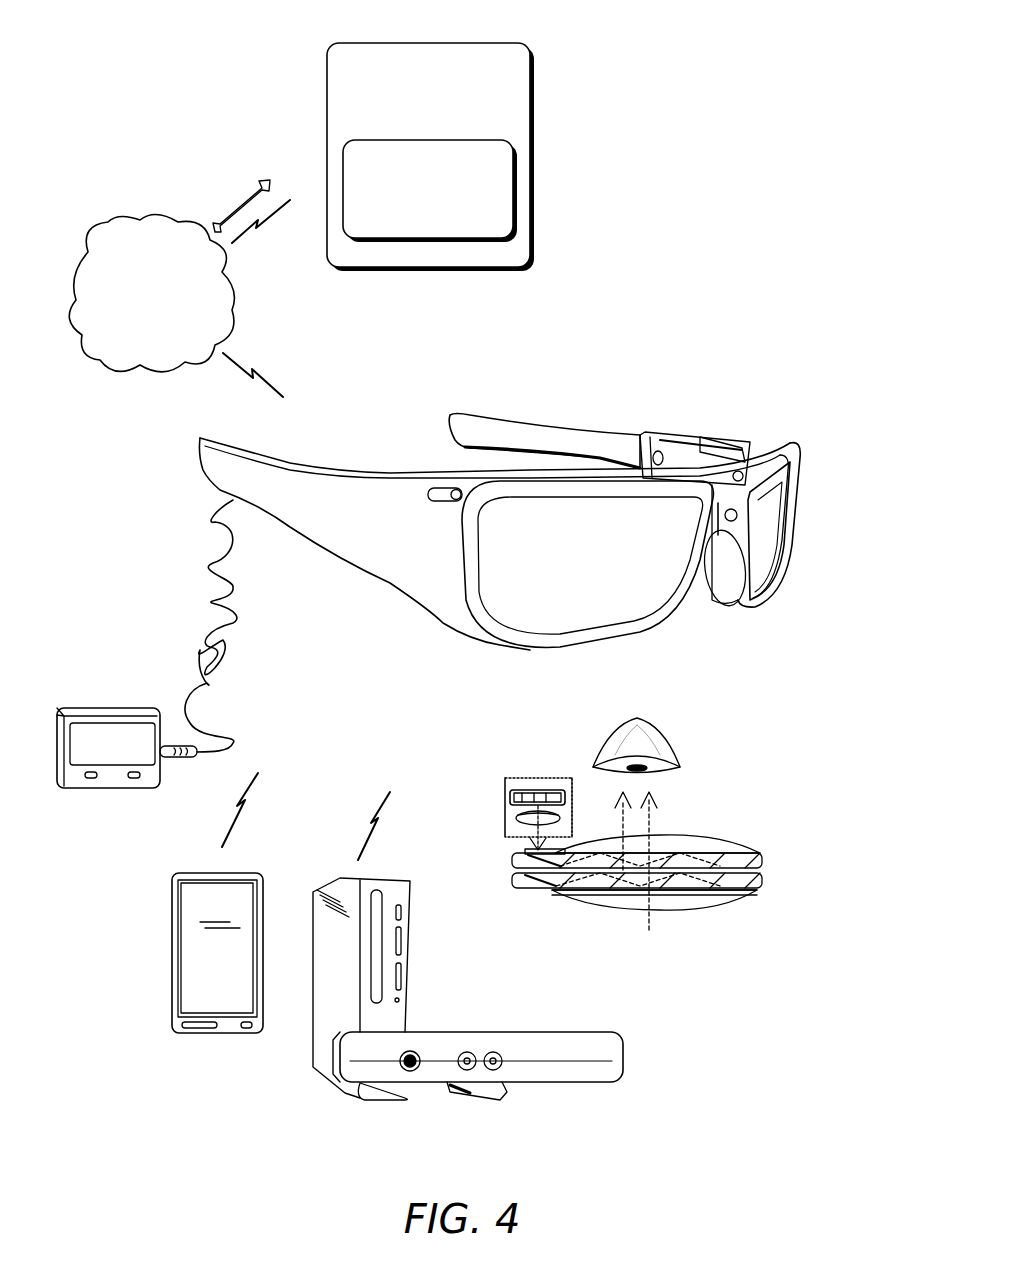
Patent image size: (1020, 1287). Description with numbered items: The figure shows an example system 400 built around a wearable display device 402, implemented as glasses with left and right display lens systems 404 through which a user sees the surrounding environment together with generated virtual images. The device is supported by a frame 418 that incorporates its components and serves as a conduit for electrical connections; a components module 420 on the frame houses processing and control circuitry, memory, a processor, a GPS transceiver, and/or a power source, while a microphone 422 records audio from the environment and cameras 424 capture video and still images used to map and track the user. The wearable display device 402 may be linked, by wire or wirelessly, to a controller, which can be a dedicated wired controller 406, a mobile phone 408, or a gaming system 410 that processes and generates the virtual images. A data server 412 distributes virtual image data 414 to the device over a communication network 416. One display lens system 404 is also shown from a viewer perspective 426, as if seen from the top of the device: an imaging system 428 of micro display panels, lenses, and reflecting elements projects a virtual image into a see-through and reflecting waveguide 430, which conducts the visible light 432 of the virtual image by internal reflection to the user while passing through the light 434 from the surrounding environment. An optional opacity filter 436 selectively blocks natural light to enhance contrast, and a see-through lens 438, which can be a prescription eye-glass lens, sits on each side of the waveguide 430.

The system 400 is at (731, 70).
The wearable display device 402 is at (670, 342).
The display lens system 404 is at (645, 603).
The controller 406 is at (127, 765).
The mobile phone 408 is at (217, 972).
The gaming system 410 is at (468, 1008).
The data server 412 is at (430, 157).
The virtual image data 414 is at (430, 191).
The communication network 416 is at (151, 292).
The frame 418 is at (392, 548).
The components module 420 is at (742, 450).
The microphone 422 is at (735, 521).
The camera 424 is at (438, 486).
The viewer perspective 426 is at (552, 402).
The imaging system 428 is at (523, 778).
The see-through and reflecting waveguide 430 is at (769, 888).
The visible light of a virtual image 432 is at (613, 828).
The light from the surrounding environment 434 is at (640, 879).
The opacity filter 436 is at (665, 895).
The see-through lens 438 is at (712, 837).